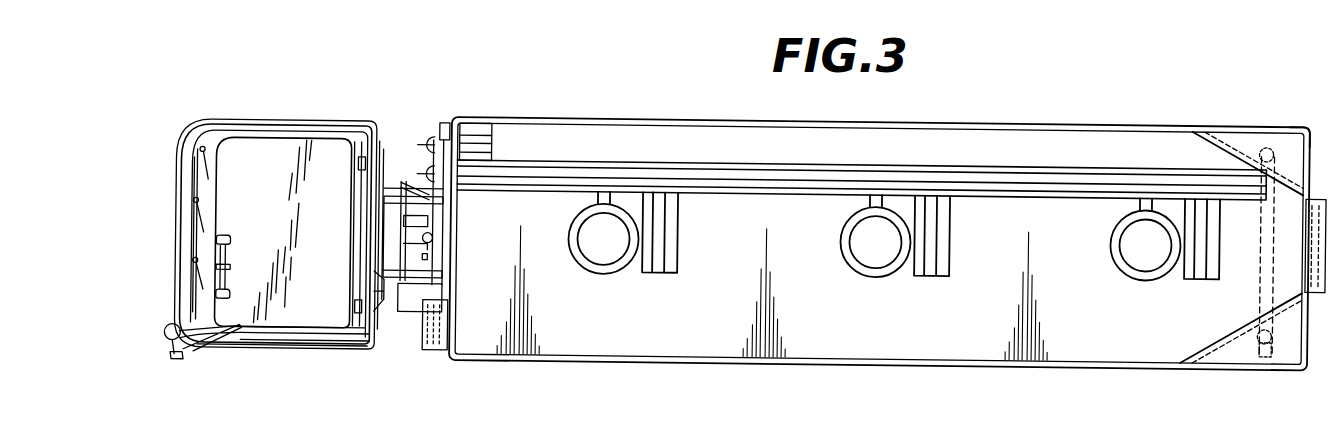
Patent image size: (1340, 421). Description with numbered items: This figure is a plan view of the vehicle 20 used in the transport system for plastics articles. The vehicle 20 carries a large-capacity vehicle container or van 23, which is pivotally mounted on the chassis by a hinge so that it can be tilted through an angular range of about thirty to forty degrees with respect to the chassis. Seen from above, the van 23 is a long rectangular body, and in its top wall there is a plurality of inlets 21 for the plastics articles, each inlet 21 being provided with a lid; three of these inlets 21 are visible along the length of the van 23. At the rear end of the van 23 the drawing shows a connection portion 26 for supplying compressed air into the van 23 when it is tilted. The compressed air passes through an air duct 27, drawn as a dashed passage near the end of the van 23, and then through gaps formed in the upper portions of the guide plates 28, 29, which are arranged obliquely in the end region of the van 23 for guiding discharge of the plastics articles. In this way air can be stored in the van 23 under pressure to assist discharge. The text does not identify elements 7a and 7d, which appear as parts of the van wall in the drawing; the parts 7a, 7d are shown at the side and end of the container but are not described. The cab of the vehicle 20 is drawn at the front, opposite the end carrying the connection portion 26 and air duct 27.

The vehicle 20 is at (287, 152).
The vehicle container or van 23 is at (716, 152).
The housing side wall 7a is at (1077, 143).
The guide plate 28 is at (1217, 143).
The housing end wall 7d is at (1298, 138).
The inlets 21 is at (596, 250).
The air duct 27 is at (1263, 270).
The guide plate 29 is at (1217, 346).
The connection portion 26 is at (1258, 350).